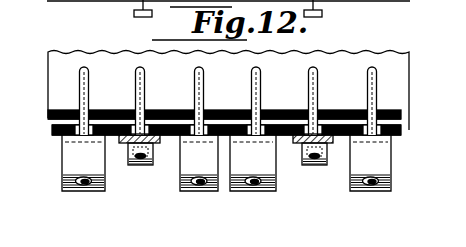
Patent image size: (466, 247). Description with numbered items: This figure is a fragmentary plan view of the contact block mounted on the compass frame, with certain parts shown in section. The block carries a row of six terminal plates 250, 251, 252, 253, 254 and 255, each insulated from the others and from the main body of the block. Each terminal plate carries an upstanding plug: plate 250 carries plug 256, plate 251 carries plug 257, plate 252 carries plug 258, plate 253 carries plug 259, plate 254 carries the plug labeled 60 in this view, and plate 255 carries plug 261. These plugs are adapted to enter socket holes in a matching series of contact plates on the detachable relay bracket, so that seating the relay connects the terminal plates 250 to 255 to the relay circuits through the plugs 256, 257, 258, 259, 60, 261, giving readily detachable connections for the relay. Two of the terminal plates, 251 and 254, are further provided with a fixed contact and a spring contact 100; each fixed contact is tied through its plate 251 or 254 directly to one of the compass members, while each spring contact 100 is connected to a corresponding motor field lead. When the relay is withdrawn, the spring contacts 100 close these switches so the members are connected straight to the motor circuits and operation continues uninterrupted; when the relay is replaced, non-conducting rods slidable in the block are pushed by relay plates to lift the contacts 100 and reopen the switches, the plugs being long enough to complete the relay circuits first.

The plug 60 is at (310, 91).
The spring contact 100 is at (141, 165).
The terminal plate 250 is at (88, 191).
The terminal plate 251 is at (120, 140).
The terminal plate 252 is at (201, 191).
The terminal plate 253 is at (261, 191).
The terminal plate 254 is at (333, 141).
The terminal plate 255 is at (373, 191).
The plug 256 is at (83, 97).
The plug 257 is at (137, 83).
The plug 258 is at (196, 87).
The plug 259 is at (253, 91).
The plug 261 is at (369, 91).